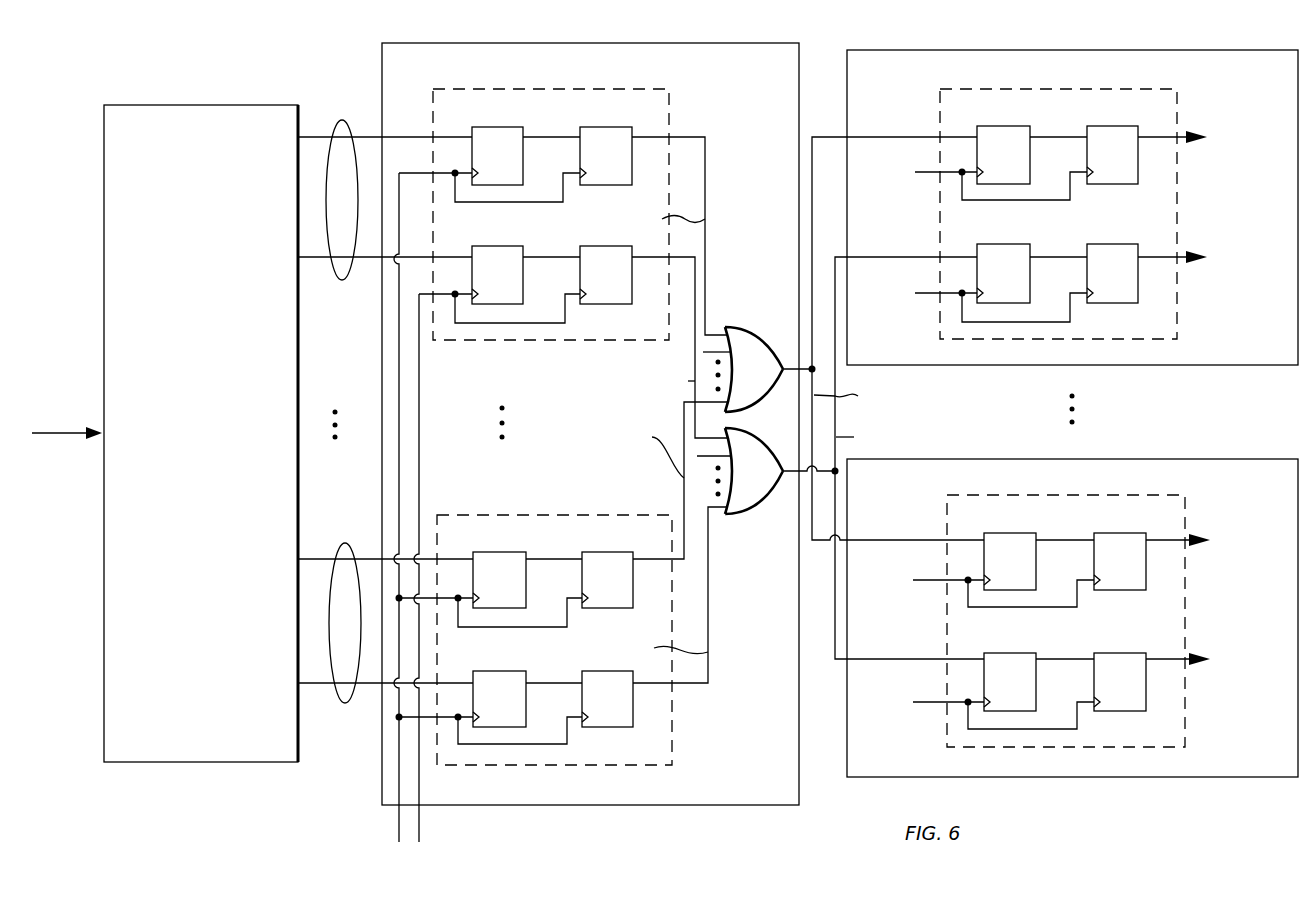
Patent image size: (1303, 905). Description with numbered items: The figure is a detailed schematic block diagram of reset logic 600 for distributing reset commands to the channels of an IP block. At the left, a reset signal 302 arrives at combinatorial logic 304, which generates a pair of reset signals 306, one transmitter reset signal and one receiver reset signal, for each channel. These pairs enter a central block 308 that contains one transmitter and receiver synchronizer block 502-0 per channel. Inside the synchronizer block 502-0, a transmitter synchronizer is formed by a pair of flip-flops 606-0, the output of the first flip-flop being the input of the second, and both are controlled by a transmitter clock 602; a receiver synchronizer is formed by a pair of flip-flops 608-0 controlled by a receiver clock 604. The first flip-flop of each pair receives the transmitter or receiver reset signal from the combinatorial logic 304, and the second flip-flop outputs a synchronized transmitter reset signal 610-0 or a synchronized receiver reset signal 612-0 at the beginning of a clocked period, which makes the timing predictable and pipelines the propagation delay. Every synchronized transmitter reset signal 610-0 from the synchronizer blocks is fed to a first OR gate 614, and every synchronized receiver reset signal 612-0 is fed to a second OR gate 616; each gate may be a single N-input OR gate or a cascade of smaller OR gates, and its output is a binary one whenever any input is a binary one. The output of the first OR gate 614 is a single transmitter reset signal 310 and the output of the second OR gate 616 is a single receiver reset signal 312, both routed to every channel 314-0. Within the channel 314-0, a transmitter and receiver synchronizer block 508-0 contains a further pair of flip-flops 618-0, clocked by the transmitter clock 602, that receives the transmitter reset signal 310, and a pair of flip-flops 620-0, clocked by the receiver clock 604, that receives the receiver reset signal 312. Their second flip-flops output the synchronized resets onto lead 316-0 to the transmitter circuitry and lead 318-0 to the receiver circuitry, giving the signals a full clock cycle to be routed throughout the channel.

The reset signal 302 is at (38, 434).
The combinatorial logic 304 is at (177, 105).
The pair of reset signals 306 is at (343, 280).
The central block 308 is at (381, 45).
The transmitter reset signal 310 is at (786, 373).
The receiver reset signal 312 is at (793, 474).
The channel 314-0 is at (987, 367).
The lead 316-0 is at (1164, 137).
The lead 318-0 is at (1160, 258).
The transmitter and receiver synchronizer block 502-0 is at (500, 89).
The transmitter and receiver synchronizer block 508-0 is at (1145, 339).
The reset logic 600 is at (819, 96).
The transmitter clock 602 is at (399, 827).
The receiver clock 604 is at (420, 825).
The pair of flip-flops 606-0 is at (602, 127).
The pair of flip-flops 608-0 is at (597, 304).
The synchronized transmitter reset signal 610-0 is at (697, 117).
The synchronized receiver reset signal 612-0 is at (697, 259).
The first OR gate 614 is at (775, 328).
The second OR gate 616 is at (757, 514).
The pair of flip-flops 618-0 is at (1108, 126).
The pair of flip-flops 620-0 is at (1108, 244).